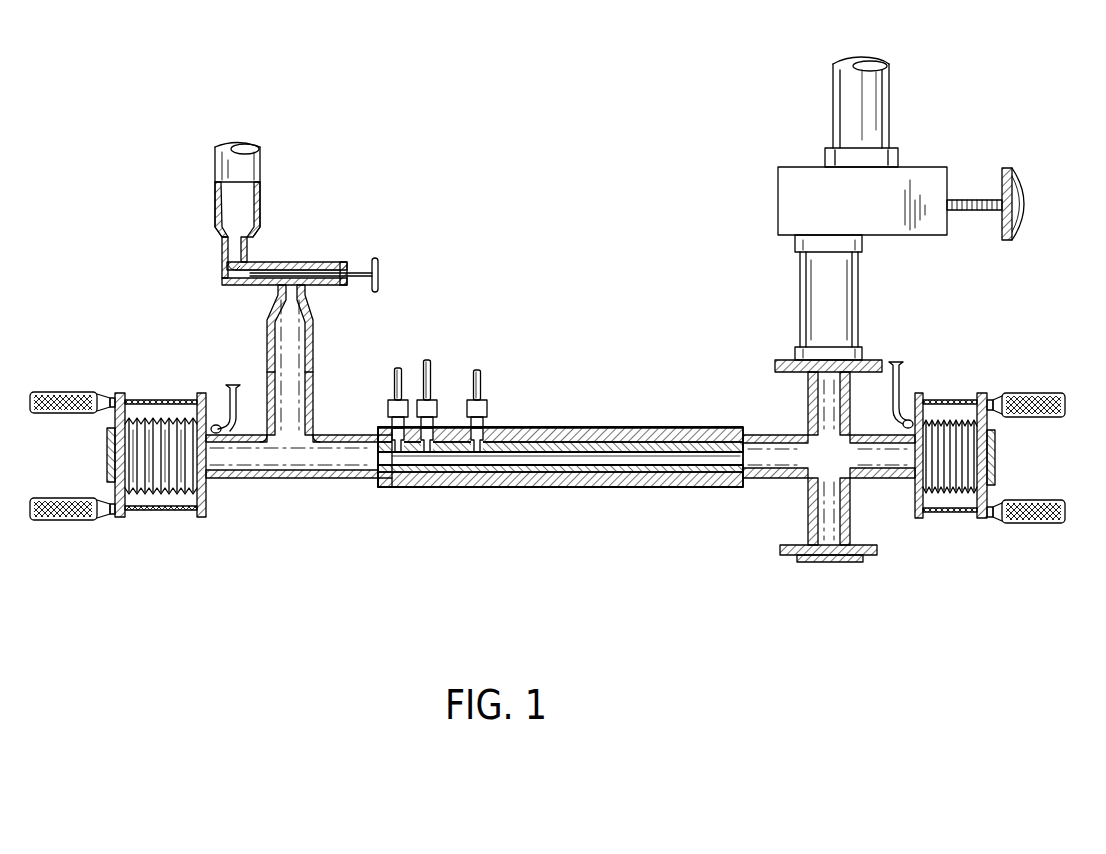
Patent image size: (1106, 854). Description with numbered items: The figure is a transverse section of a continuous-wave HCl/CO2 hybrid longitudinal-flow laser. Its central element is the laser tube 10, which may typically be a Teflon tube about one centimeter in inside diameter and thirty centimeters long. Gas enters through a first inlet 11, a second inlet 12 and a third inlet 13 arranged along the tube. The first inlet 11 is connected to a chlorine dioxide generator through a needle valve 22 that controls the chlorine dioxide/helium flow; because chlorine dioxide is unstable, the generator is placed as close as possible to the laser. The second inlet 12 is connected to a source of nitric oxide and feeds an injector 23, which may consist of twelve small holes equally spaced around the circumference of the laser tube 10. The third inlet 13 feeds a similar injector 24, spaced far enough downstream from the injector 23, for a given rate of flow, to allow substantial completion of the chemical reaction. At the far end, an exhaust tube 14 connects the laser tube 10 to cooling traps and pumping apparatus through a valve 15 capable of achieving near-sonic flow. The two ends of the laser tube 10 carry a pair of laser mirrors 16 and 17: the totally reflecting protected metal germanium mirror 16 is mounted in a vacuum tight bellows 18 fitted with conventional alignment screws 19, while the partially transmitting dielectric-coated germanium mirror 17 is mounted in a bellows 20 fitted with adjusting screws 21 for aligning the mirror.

The laser tube 10 is at (590, 487).
The first inlet 11 is at (312, 400).
The second inlet 12 is at (390, 405).
The third inlet 13 is at (435, 405).
The exhaust tube 14 is at (858, 322).
The valve 15 is at (848, 211).
The laser mirror 16 is at (107, 465).
The laser mirror 17 is at (995, 447).
The vacuum tight bellows 18 is at (146, 418).
The alignment screws 19 is at (72, 392).
The bellows 20 is at (946, 424).
The adjusting screws 21 is at (1043, 393).
The needle valve 22 is at (378, 266).
The injector 23 is at (392, 465).
The injector 24 is at (442, 478).